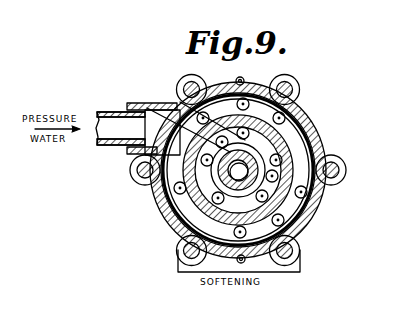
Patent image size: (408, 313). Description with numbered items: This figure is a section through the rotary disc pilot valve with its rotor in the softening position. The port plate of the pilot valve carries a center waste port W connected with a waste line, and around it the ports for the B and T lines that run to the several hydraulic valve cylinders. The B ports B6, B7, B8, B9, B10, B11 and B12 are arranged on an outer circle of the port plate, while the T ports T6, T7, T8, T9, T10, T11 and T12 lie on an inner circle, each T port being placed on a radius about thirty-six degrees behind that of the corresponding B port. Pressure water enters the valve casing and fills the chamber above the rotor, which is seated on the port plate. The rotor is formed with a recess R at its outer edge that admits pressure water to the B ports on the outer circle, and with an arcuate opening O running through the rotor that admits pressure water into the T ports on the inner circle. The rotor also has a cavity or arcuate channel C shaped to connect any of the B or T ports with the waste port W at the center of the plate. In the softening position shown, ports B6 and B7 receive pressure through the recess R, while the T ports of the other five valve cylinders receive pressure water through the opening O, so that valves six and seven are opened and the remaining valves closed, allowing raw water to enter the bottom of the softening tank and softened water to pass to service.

The T port T6 is at (175, 104).
The B port B12 is at (181, 102).
The B port B6 is at (252, 88).
The T port T7 is at (300, 110).
The B port B7 is at (286, 125).
The rotor recess R is at (296, 134).
The T port T8 is at (287, 147).
The T port T9 is at (300, 160).
The B port B8 is at (312, 190).
The T port T10 is at (308, 206).
The B port B9 is at (300, 226).
The B port B10 is at (300, 245).
The T port T12 is at (150, 170).
The B port B11 is at (168, 195).
The arcuate opening O is at (172, 210).
The T port T11 is at (185, 225).
The arcuate channel C is at (196, 130).
The waste port W is at (238, 167).